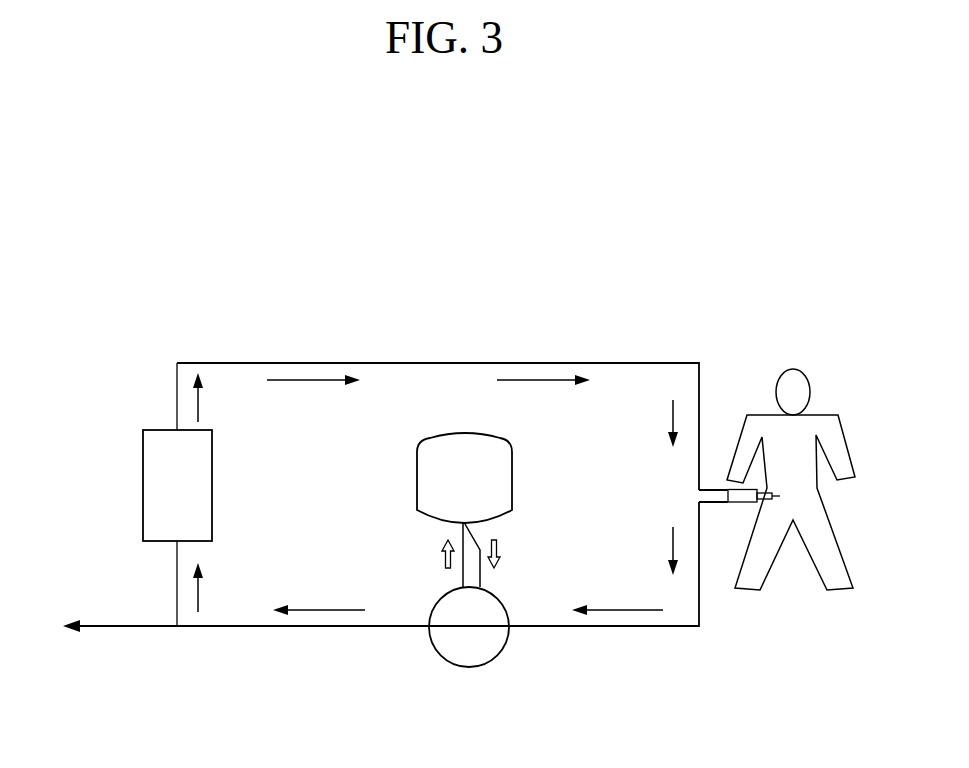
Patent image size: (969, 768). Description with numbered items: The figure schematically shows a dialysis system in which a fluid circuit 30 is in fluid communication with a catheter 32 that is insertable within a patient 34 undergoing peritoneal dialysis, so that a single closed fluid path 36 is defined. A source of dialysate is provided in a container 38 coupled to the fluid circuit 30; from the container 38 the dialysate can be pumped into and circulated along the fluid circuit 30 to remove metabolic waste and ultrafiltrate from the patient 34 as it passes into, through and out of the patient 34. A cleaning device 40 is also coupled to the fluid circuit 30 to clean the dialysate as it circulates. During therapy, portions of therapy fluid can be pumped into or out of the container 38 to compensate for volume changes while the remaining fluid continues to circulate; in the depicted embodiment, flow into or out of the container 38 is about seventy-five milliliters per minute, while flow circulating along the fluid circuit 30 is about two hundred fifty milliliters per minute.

The fluid circuit 30 is at (136, 245).
The catheter 32 is at (727, 504).
The patient 34 is at (810, 388).
The single closed fluid path 36 is at (327, 504).
The container 38 is at (512, 482).
The cleaning device 40 is at (143, 517).